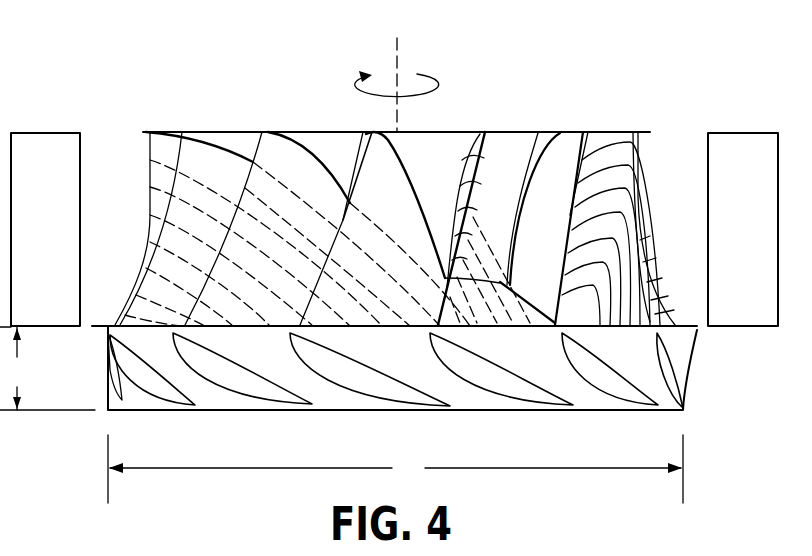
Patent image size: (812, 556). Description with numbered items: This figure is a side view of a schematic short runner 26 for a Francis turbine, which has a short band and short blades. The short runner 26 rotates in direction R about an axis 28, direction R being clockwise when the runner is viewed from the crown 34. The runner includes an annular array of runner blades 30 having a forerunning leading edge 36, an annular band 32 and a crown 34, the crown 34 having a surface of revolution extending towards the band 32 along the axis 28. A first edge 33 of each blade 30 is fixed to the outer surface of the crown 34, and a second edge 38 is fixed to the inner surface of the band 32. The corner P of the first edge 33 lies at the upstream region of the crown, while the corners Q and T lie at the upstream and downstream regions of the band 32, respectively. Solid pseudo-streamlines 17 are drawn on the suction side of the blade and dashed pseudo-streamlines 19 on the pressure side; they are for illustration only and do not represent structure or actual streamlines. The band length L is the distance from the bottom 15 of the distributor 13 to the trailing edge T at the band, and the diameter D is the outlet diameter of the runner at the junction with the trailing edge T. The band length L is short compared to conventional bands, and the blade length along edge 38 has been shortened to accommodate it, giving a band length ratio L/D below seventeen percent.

The distributor 13 is at (30, 239).
The bottom of the distributor 15 is at (90, 327).
The solid pseudo-streamlines 17 is at (612, 190).
The dashed pseudo-streamlines 19 is at (204, 170).
The short runner 26 is at (85, 73).
The axis 28 is at (398, 52).
The runner blades 30 is at (306, 178).
The annular band 32 is at (684, 412).
The first edge 33 is at (537, 132).
The crown 34 is at (607, 132).
The leading edge 36 is at (358, 178).
The second edge 38 is at (499, 382).
The direction of rotation R is at (397, 74).
The corner P is at (488, 122).
The corner Q is at (283, 348).
The trailing edge corner T is at (441, 416).
The band length L is at (16, 368).
The diameter D is at (395, 469).